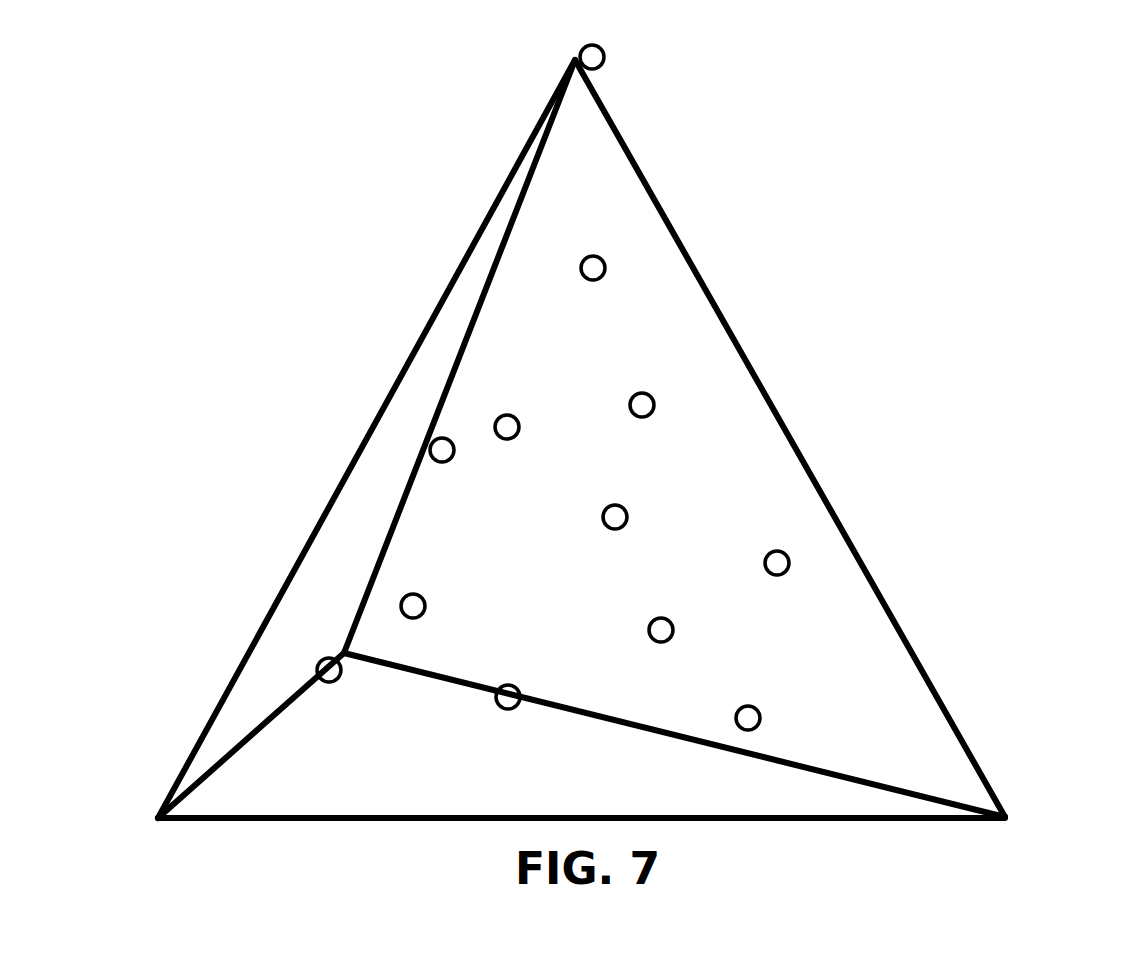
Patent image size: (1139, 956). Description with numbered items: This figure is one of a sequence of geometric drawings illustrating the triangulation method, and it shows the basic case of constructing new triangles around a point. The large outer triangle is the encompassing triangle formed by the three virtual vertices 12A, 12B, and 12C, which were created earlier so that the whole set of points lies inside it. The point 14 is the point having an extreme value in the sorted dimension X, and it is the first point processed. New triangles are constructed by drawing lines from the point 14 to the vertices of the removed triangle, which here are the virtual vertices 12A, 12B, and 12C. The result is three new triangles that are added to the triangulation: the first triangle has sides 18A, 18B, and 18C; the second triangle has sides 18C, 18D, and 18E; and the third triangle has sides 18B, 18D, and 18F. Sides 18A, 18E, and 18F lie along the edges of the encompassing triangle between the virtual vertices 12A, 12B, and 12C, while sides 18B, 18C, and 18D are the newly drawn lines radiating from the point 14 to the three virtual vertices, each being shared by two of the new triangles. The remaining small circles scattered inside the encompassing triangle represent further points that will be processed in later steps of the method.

The virtual vertex 12A is at (148, 796).
The virtual vertex 12B is at (1017, 797).
The virtual vertex 12C is at (556, 60).
The point 14 is at (322, 662).
The triangle side 18A is at (365, 437).
The triangle side 18B is at (395, 515).
The triangle side 18C is at (258, 731).
The triangle side 18D is at (635, 727).
The triangle side 18E is at (424, 820).
The triangle side 18F is at (776, 413).